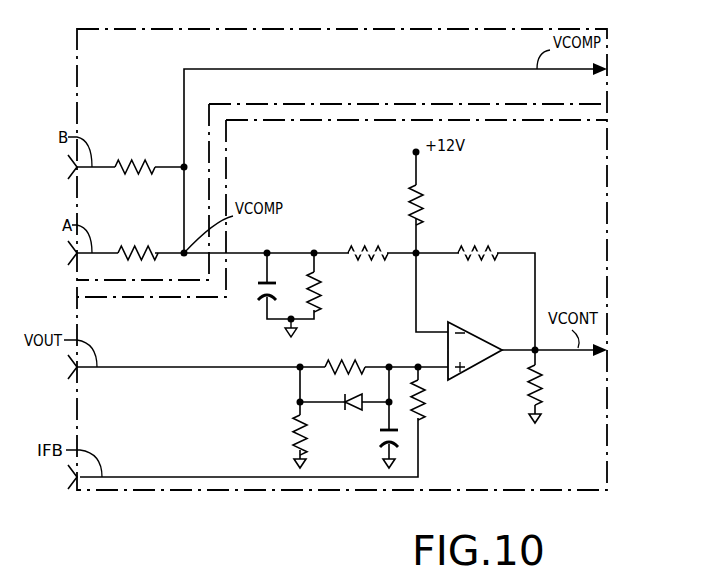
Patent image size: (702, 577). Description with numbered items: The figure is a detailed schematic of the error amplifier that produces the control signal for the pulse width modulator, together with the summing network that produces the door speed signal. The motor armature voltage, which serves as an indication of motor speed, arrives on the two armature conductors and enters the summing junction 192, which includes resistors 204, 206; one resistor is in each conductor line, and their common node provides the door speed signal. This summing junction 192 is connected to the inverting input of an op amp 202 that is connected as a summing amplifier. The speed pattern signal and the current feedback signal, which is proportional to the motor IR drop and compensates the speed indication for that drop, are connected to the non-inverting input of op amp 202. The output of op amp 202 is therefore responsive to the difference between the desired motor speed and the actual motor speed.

The summing junction 192 is at (158, 490).
The op amp 202 is at (483, 364).
The resistor 204 is at (138, 247).
The resistor 206 is at (138, 160).